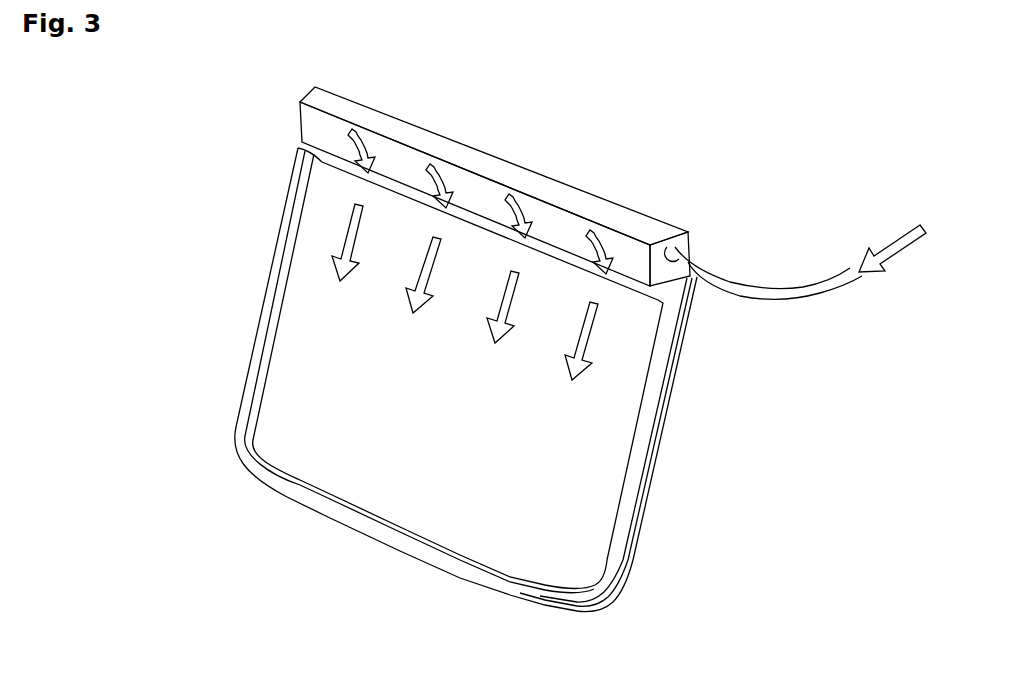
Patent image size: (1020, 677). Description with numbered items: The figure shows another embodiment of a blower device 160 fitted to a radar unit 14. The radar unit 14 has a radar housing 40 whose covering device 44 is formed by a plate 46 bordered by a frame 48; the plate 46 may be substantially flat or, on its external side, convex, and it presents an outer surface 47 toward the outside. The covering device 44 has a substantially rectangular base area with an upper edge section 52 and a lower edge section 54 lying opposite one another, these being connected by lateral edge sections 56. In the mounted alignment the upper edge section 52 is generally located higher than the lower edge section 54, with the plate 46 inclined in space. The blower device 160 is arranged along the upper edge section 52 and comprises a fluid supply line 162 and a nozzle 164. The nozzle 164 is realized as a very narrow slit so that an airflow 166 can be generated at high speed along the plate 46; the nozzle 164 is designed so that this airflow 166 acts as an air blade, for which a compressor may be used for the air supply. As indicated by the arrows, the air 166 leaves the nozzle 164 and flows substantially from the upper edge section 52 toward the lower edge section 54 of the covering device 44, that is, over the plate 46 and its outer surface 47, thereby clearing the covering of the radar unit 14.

The radar unit 14 is at (248, 252).
The radar housing 40 is at (668, 310).
The covering device 44 is at (563, 490).
The plate 46 is at (433, 512).
The outer surface 47 is at (313, 407).
The frame 48 is at (289, 500).
The upper edge section 52 is at (347, 172).
The lower edge section 54 is at (367, 528).
The lateral edge sections 56 is at (267, 323).
The blower device 160 is at (492, 160).
The fluid supply line 162 is at (812, 286).
The nozzle 164 is at (612, 280).
The airflow 166 is at (575, 363).